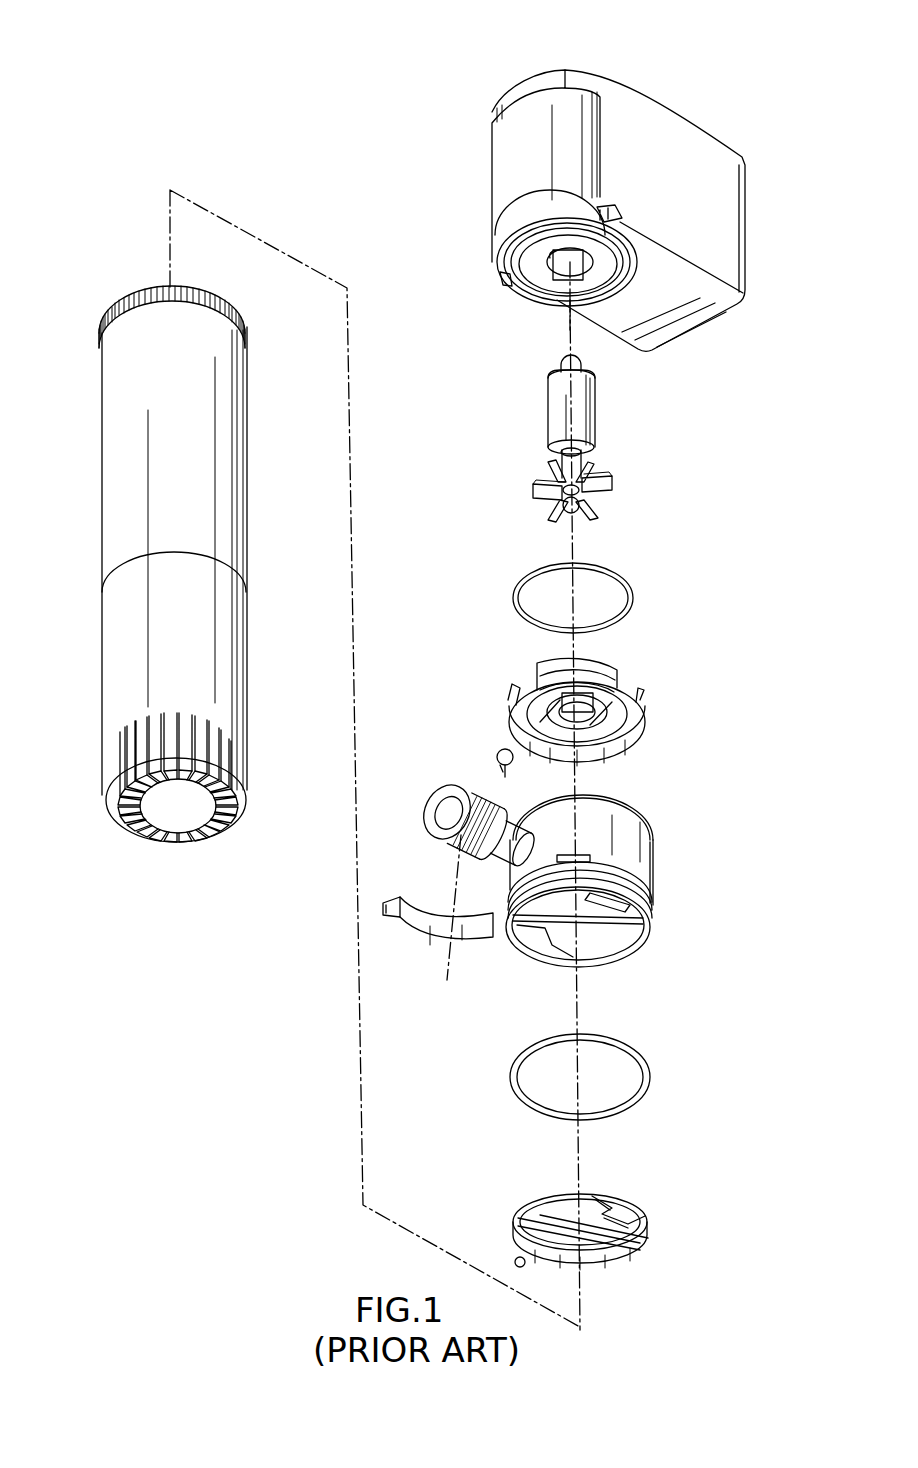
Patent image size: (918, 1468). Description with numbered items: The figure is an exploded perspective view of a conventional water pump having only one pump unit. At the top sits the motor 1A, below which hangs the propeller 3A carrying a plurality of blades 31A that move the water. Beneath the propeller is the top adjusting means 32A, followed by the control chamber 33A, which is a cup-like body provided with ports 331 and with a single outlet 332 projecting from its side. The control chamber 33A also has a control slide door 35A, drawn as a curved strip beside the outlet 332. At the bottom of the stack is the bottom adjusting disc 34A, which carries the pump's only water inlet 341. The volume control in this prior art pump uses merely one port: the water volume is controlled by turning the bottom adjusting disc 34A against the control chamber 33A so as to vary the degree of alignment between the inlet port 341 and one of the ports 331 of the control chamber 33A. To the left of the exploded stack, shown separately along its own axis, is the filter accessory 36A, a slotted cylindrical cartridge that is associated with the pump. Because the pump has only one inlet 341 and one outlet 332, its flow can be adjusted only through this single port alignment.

The motor 1A is at (612, 107).
The propeller 3A is at (596, 408).
The blades 31A is at (613, 490).
The top adjusting means 32A is at (623, 678).
The control chamber 33A is at (584, 869).
The ports of the control chamber 331 is at (537, 940).
The outlet 332 is at (442, 792).
The bottom adjusting disc 34A is at (636, 1250).
The water inlet 341 is at (615, 1210).
The control slide door 35A is at (452, 952).
The filter accessory 36A is at (135, 683).